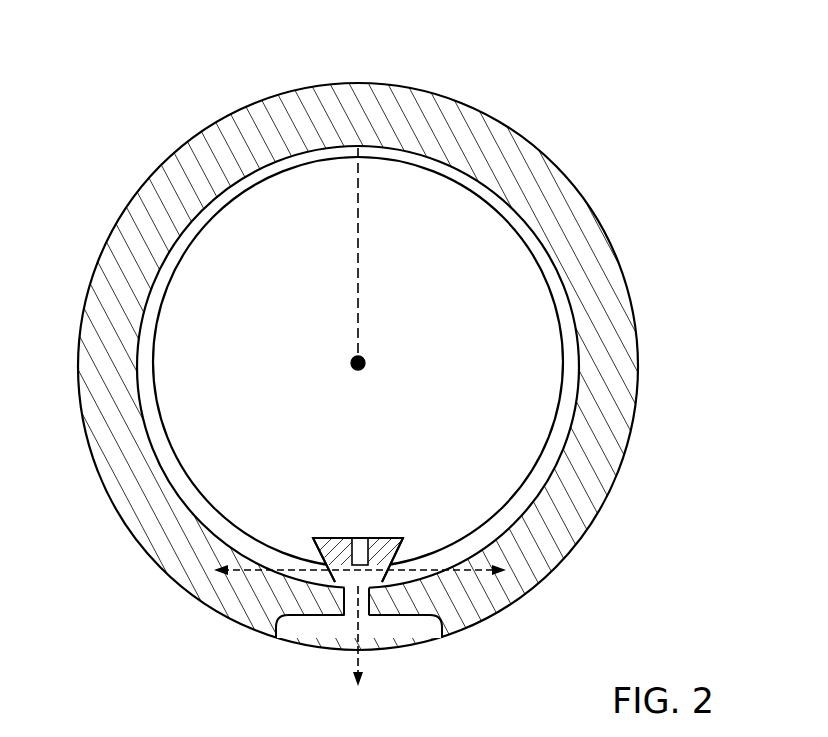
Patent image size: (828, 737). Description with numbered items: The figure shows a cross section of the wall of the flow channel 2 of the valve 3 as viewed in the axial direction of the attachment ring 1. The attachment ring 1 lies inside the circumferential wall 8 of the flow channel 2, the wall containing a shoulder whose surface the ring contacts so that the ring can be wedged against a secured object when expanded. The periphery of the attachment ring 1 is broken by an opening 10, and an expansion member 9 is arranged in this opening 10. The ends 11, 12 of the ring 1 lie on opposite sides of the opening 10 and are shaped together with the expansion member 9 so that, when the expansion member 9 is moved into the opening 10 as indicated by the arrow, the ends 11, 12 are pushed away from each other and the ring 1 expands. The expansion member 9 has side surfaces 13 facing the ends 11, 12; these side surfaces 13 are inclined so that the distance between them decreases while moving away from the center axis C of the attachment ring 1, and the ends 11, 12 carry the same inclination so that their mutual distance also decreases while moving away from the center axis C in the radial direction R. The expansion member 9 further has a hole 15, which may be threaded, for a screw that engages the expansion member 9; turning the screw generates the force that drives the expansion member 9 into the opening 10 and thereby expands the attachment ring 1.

The attachment ring 1 is at (398, 155).
The flow channel 2 is at (176, 303).
The valve 3 is at (593, 220).
The circumferential wall 8 is at (193, 516).
The expansion member 9 is at (389, 538).
The opening 10 is at (369, 580).
The end of the attachment ring 11 is at (335, 578).
The end of the attachment ring 12 is at (380, 576).
The side surfaces 13 is at (317, 546).
The hole 15 is at (354, 538).
The radial direction R is at (358, 278).
The center axis C is at (365, 362).